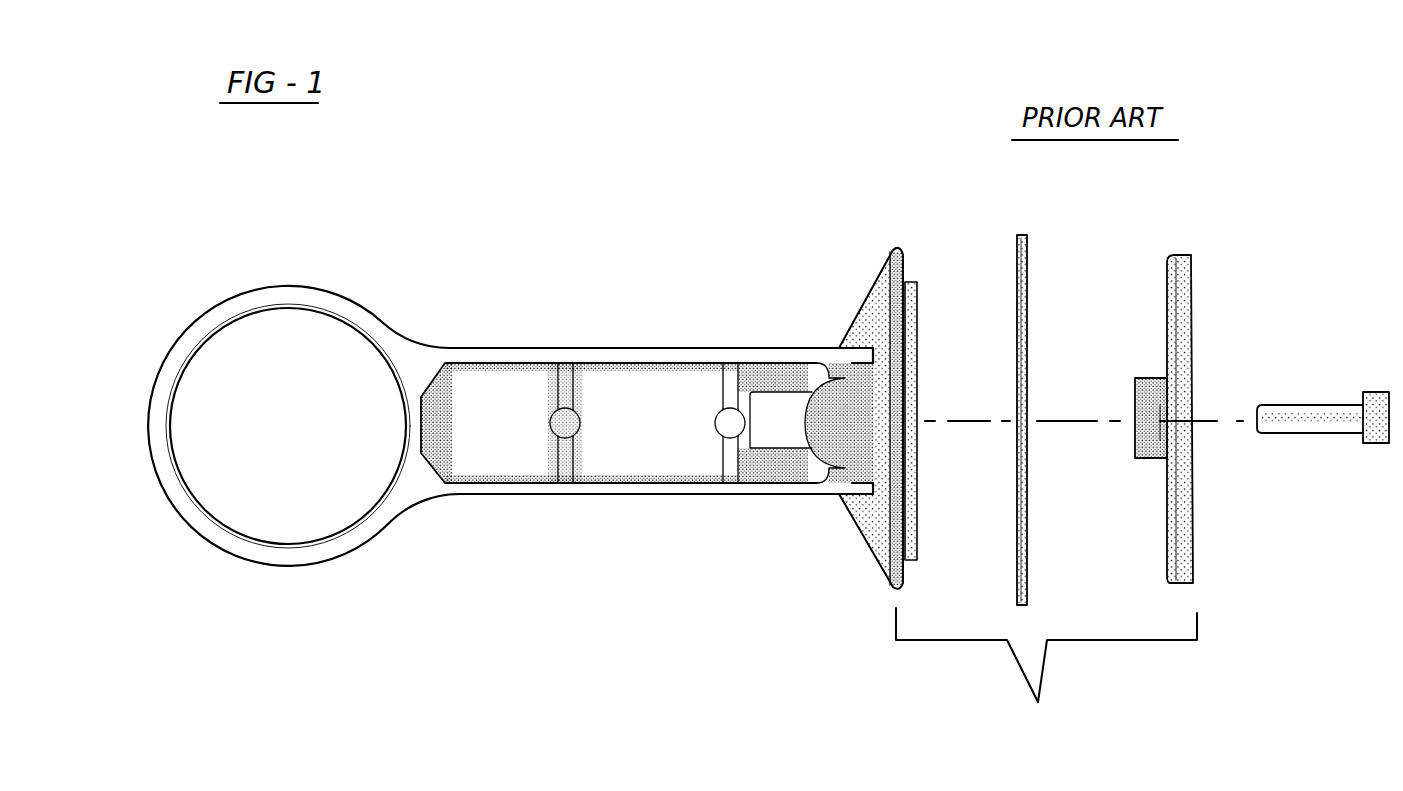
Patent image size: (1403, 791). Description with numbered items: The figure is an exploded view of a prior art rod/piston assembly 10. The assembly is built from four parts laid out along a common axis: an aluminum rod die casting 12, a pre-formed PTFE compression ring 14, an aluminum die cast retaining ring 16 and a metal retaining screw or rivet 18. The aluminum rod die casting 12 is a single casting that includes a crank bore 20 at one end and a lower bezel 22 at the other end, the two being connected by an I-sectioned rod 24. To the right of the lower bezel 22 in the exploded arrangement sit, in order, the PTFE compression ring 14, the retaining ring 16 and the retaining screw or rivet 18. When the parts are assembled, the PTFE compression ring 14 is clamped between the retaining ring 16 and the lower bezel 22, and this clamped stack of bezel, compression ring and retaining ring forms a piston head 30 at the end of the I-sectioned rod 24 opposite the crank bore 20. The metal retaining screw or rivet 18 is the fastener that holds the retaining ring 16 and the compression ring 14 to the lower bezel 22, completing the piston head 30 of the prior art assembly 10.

The rod/piston assembly 10 is at (532, 398).
The aluminum rod die casting 12 is at (574, 372).
The pre-formed PTFE compression ring 14 is at (1022, 266).
The aluminum die cast retaining ring 16 is at (1196, 272).
The metal retaining screw or rivet 18 is at (1319, 404).
The crank bore 20 is at (333, 343).
The lower bezel 22 is at (873, 310).
The I-sectioned rod 24 is at (652, 470).
The piston head 30 is at (1046, 674).